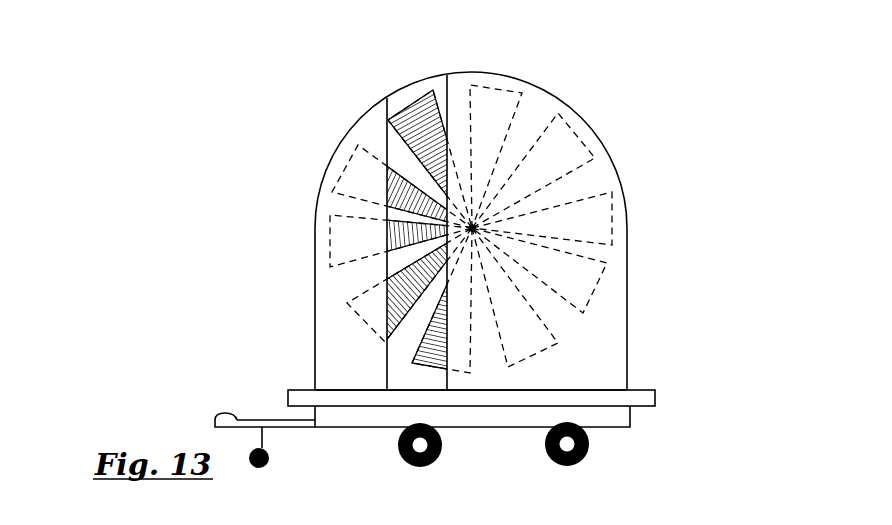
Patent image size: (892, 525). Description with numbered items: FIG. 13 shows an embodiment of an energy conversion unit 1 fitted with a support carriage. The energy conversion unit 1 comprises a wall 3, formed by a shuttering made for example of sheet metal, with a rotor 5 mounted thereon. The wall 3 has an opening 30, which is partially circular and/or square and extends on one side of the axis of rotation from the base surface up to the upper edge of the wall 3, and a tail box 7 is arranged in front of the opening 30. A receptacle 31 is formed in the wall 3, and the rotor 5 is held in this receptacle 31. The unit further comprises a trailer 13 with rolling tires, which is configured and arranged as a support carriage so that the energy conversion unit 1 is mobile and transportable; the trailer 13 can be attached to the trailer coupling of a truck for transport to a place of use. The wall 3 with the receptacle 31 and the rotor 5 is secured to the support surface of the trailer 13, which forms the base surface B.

The energy conversion unit 1 is at (143, 134).
The wall 3 is at (542, 95).
The opening 30 is at (393, 93).
The receptacle 31 is at (619, 178).
The rotor 5 is at (413, 120).
The tail box 7 is at (318, 232).
The trailer 13 is at (637, 388).
The base surface B is at (300, 389).